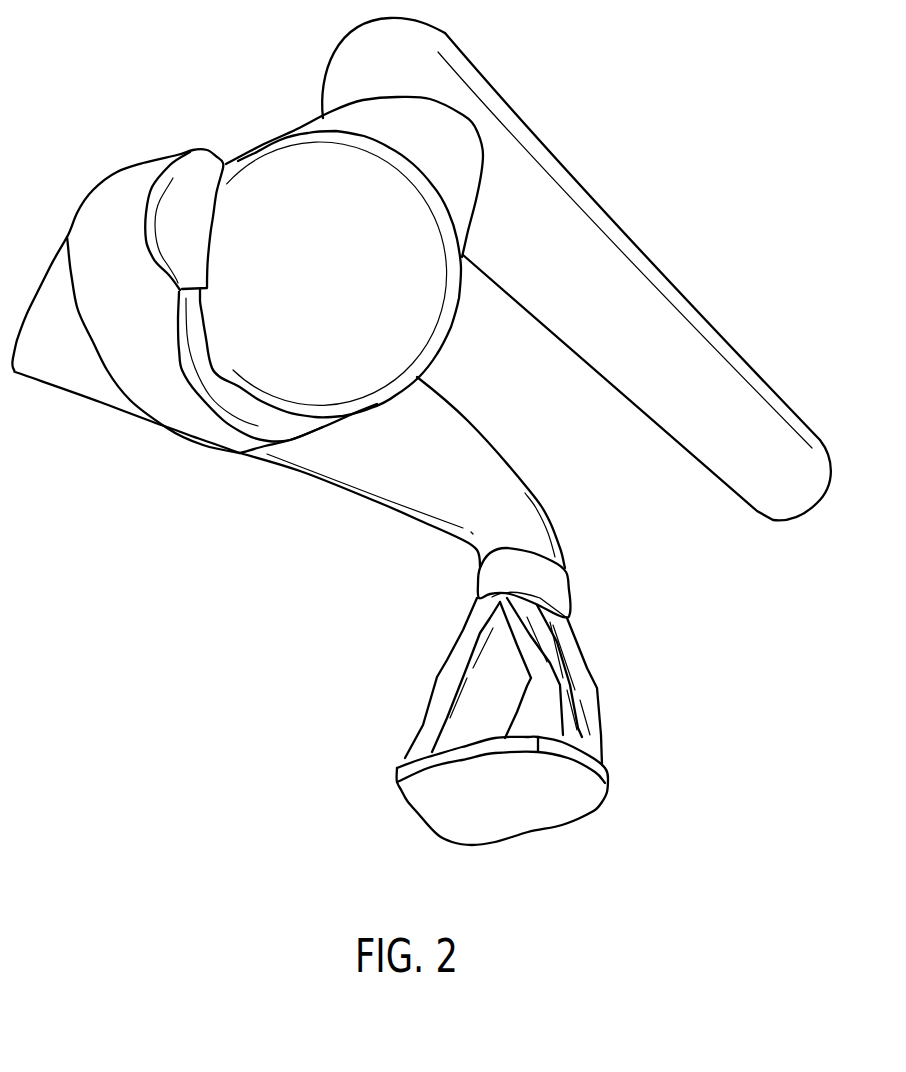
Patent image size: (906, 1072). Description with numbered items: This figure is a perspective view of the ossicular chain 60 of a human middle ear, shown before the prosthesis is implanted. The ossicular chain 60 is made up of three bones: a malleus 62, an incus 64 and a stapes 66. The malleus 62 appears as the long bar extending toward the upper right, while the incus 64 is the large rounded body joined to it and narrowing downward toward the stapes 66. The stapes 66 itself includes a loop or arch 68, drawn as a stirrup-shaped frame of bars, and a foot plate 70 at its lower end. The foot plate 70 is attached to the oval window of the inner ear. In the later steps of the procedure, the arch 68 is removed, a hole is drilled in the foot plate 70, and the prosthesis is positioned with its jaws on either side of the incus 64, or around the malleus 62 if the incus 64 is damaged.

The ossicular chain 60 is at (421, 451).
The malleus 62 is at (636, 229).
The incus 64 is at (293, 485).
The stapes 66 is at (597, 685).
The arch 68 is at (588, 720).
The foot plate 70 is at (522, 805).